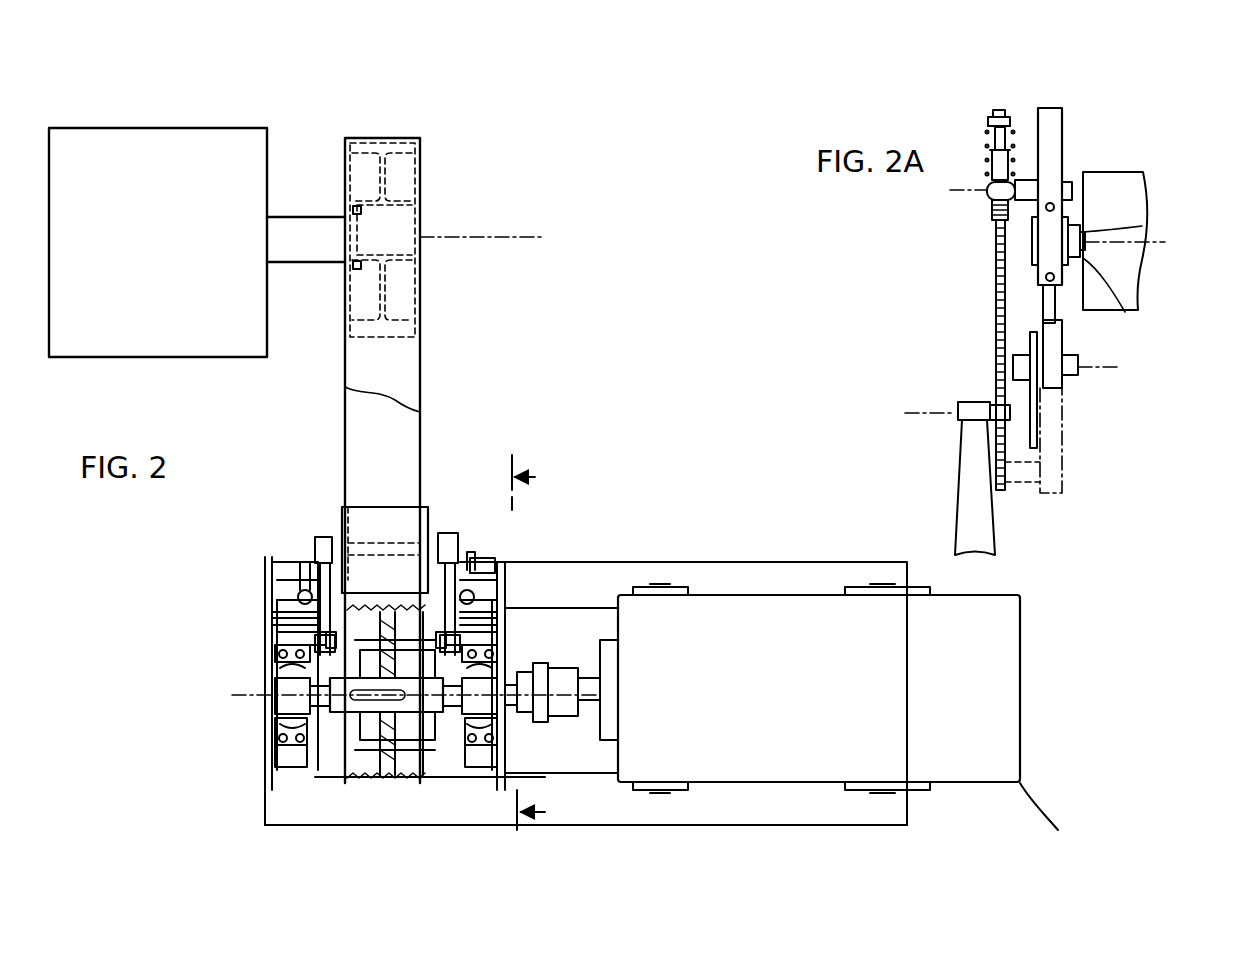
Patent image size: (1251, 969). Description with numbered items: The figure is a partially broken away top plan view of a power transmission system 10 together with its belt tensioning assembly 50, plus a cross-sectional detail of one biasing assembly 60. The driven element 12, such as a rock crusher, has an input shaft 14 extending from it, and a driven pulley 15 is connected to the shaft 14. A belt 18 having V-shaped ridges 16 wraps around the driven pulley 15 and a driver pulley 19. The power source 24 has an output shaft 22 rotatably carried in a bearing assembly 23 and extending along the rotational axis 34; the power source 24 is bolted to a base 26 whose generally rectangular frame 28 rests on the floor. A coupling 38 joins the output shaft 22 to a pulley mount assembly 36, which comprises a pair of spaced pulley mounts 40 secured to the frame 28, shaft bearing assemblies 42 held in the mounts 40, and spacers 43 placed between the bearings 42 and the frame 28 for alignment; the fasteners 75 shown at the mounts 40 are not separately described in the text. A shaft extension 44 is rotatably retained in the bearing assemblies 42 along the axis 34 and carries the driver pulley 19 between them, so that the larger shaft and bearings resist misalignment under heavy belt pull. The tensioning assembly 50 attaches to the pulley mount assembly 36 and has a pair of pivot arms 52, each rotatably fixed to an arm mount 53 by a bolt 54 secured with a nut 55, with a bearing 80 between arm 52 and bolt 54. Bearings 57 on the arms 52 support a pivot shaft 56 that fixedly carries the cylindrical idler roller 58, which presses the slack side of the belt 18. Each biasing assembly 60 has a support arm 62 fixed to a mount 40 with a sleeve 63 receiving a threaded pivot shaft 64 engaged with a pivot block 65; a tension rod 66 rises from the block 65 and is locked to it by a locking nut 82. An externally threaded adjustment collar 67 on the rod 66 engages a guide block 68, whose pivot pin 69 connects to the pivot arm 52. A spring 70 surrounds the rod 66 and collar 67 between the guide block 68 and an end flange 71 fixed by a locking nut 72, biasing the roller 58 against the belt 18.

In FIG. 2, the power transmission system 10 is at (462, 378).
In FIG. 2, the driven element 12 is at (182, 127).
In FIG. 2, the input shaft 14 is at (295, 217).
In FIG. 2, the driven pulley 15 is at (392, 183).
In FIG. 2, the V-shaped ridges 16 is at (398, 782).
In FIG. 2, the belt 18 is at (350, 365).
In FIG. 2, the driver pulley 19 is at (433, 785).
In FIG. 2, the output shaft 22 is at (598, 705).
In FIG. 2, the bearing assembly 23 is at (577, 668).
In FIG. 2, the power source 24 is at (745, 783).
In FIG. 2, the base 26 is at (713, 562).
In FIG. 2, the rectangular frame 28 is at (778, 592).
In FIG. 2, the rotational axis 34 is at (232, 697).
In FIG. 2, the pulley mount assembly 36 is at (257, 628).
In FIG. 2, the coupling 38 is at (525, 780).
In FIG. 2, the pulley mounts 40 is at (270, 757).
In FIG. 2, the shaft bearing assemblies 42 is at (282, 707).
In FIG. 2, the spacers 43 is at (272, 610).
In FIG. 2, the shaft extension 44 is at (340, 778).
In FIG. 2, the tensioning assembly 50 is at (314, 522).
In FIG. 2A, the tensioning assembly 50 is at (1132, 148).
In FIG. 2, the pivot arms 52 is at (315, 537).
In FIG. 2A, the pivot arms 52 is at (1057, 122).
In FIG. 2, the arm mounts 53 is at (290, 655).
In FIG. 2A, the arm mounts 53 is at (1037, 402).
In FIG. 2, the bolts 54 is at (293, 647).
In FIG. 2A, the bolts 54 is at (1078, 377).
In FIG. 2, the nuts 55 is at (290, 643).
In FIG. 2A, the nuts 55 is at (1043, 300).
In FIG. 2A, the pivot shaft 56 is at (1085, 242).
In FIG. 2, the bearings 57 is at (303, 556).
In FIG. 2A, the bearings 57 is at (1063, 102).
In FIG. 2, the idler roller 58 is at (380, 600).
In FIG. 2A, the idler roller 58 is at (1130, 190).
In FIG. 2, the biasing assemblies 60 is at (298, 560).
In FIG. 2A, the biasing assemblies 60 is at (930, 325).
In FIG. 2A, the support arm 62 is at (960, 479).
In FIG. 2A, the sleeve 63 is at (962, 400).
In FIG. 2A, the threaded pivot shaft 64 is at (957, 410).
In FIG. 2A, the pivot block 65 is at (1005, 422).
In FIG. 2A, the tension rod 66 is at (996, 304).
In FIG. 2A, the adjustment collar 67 is at (992, 212).
In FIG. 2A, the guide block 68 is at (987, 190).
In FIG. 2A, the pivot pin 69 is at (1020, 180).
In FIG. 2, the spring 70 is at (383, 603).
In FIG. 2A, the spring 70 is at (992, 168).
In FIG. 2A, the end flange 71 is at (993, 125).
In FIG. 2A, the locking nut 72 is at (996, 118).
In FIG. 2, the bolts 75 is at (318, 785).
In FIG. 2A, the bearing 80 is at (1062, 357).
In FIG. 2A, the locking nut 82 is at (995, 405).